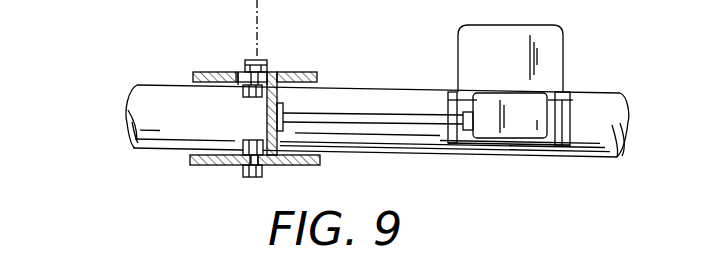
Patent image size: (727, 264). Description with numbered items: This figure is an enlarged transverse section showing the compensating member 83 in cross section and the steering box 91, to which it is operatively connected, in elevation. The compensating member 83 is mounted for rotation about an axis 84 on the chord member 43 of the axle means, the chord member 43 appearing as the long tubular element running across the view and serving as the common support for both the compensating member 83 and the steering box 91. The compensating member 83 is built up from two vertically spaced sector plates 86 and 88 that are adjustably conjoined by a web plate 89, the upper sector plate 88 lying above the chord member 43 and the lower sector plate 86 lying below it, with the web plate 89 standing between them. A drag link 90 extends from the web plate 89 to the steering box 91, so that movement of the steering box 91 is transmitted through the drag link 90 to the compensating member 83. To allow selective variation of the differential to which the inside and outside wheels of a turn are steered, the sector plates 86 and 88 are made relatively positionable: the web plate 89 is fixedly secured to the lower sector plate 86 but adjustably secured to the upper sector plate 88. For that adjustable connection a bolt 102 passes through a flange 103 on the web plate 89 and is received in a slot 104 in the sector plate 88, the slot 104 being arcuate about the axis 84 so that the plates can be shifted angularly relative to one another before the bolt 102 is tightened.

The chord member 43 is at (143, 103).
The compensating member 83 is at (249, 117).
The axis 84 is at (259, 13).
The sector plate 86 is at (308, 163).
The sector plate 88 is at (313, 72).
The web plate 89 is at (267, 102).
The drag link 90 is at (402, 118).
The steering box 91 is at (525, 125).
The bolt 102 is at (253, 62).
The flange 103 is at (243, 90).
The slot 104 is at (273, 72).